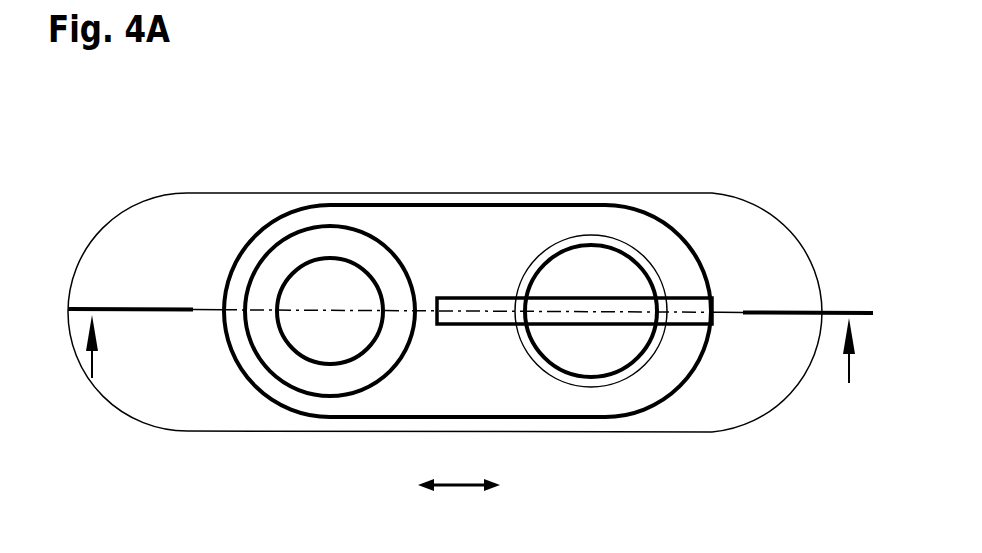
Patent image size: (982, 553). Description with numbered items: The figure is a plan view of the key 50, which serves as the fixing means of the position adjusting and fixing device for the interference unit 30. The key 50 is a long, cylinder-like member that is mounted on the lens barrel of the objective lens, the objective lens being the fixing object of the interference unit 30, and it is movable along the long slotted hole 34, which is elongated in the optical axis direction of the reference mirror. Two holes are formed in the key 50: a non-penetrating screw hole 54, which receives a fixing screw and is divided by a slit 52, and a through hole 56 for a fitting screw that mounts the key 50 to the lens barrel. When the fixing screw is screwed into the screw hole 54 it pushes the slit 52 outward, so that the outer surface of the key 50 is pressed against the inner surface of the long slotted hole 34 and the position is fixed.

The interference unit 30 is at (470, 303).
The long slotted hole 34 is at (166, 366).
The key 50 is at (444, 205).
The slit 52 is at (712, 327).
The non-penetrating screw hole 54 is at (618, 287).
The through hole 56 is at (330, 245).